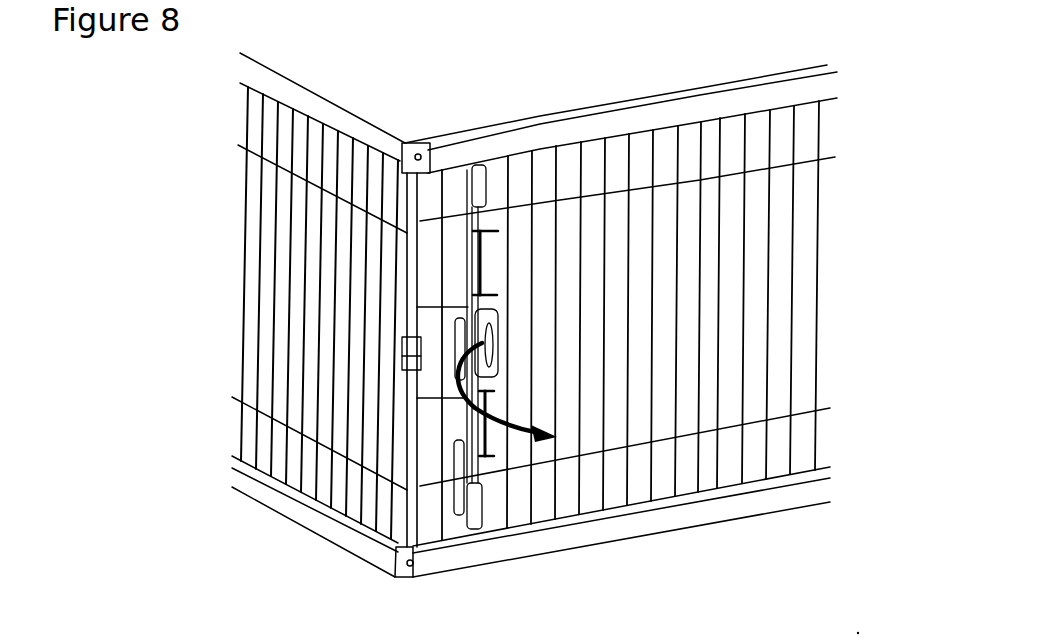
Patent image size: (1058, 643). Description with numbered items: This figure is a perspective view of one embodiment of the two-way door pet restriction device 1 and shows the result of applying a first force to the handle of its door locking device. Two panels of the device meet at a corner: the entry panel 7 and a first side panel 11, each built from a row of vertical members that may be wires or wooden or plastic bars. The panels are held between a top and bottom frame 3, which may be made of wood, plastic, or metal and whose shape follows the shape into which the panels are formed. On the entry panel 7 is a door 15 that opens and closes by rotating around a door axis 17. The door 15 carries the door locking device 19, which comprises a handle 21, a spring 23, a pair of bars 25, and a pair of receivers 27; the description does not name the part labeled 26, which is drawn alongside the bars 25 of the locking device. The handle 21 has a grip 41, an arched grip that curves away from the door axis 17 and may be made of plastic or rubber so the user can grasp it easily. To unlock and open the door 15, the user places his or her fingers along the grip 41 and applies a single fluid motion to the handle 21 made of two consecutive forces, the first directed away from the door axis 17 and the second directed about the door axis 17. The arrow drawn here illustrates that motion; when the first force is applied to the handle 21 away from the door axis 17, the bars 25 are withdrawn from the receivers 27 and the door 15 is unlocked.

The two-way door pet restriction device 1 is at (826, 47).
The top and bottom frame 3 is at (287, 72).
The entry panel 7 is at (833, 270).
The first side panel 11 is at (229, 221).
The door 15 is at (630, 340).
The door axis 17 is at (705, 238).
The door locking device 19 is at (442, 360).
The handle 21 is at (400, 334).
The spring 23 is at (513, 355).
The pair of bars 25 is at (470, 527).
The guide rail 26 is at (476, 286).
The pair of receivers 27 is at (499, 281).
The grip 41 is at (453, 318).